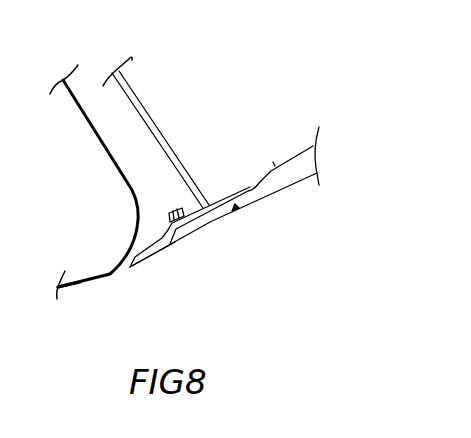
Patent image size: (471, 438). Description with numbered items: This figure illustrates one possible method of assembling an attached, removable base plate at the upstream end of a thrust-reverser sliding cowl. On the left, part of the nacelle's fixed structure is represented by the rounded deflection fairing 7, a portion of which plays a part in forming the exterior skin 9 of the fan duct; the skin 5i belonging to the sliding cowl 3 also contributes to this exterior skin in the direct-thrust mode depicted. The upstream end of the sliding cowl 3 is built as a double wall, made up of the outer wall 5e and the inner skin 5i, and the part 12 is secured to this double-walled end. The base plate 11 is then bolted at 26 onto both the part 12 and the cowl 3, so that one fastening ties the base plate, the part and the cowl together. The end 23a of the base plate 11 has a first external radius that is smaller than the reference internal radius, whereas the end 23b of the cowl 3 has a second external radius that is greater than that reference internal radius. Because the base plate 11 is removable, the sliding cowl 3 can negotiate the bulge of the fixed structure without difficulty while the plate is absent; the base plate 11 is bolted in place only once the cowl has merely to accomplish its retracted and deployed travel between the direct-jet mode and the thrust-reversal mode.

The part 12 is at (180, 107).
The sliding cowl 3 is at (333, 144).
The outer wall of sliding cowl 5e is at (288, 161).
The skin of sliding cowl 5i is at (244, 207).
The bolt 26 is at (183, 208).
The base plate 11 is at (151, 245).
The rounded deflection fairing 7 is at (136, 225).
The exterior skin of fan duct 9 is at (82, 288).
The end of base plate 23a is at (140, 257).
The end of cowl 23b is at (174, 249).